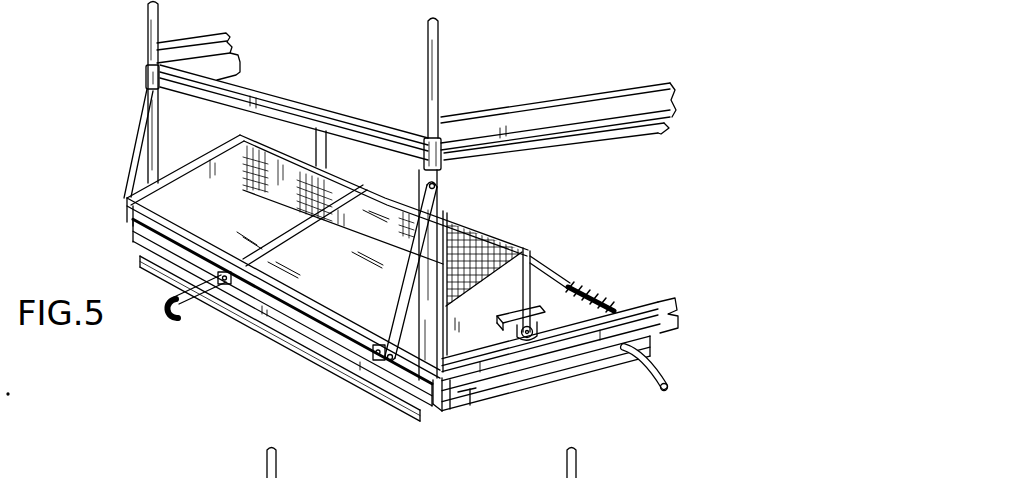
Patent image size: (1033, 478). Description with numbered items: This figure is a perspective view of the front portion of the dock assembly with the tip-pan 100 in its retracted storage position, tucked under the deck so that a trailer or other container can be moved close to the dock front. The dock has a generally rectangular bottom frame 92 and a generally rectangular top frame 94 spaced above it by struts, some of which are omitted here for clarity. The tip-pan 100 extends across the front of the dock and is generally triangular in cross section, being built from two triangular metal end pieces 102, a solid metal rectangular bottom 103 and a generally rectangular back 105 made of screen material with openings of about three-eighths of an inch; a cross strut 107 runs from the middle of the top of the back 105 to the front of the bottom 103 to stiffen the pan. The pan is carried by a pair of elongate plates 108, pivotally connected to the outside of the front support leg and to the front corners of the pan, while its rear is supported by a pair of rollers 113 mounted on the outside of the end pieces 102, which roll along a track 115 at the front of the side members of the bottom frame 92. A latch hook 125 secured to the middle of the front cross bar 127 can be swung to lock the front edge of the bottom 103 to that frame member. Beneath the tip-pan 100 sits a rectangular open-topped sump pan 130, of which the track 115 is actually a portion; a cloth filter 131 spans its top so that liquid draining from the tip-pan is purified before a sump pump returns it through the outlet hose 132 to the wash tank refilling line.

The bottom frame 92 is at (433, 404).
The top frame 94 is at (635, 128).
The tip-pan 100 is at (481, 200).
The end pieces 102 is at (512, 307).
The bottom 103 is at (356, 291).
The back 105 is at (342, 199).
The cross strut 107 is at (282, 235).
The elongate plates 108 is at (396, 311).
The rollers 113 is at (516, 338).
The track 115 is at (660, 300).
The latch hook 125 is at (188, 306).
The front cross bar 127 is at (410, 412).
The sump pan 130 is at (546, 282).
The cloth filter 131 is at (583, 303).
The outlet hose 132 is at (660, 371).